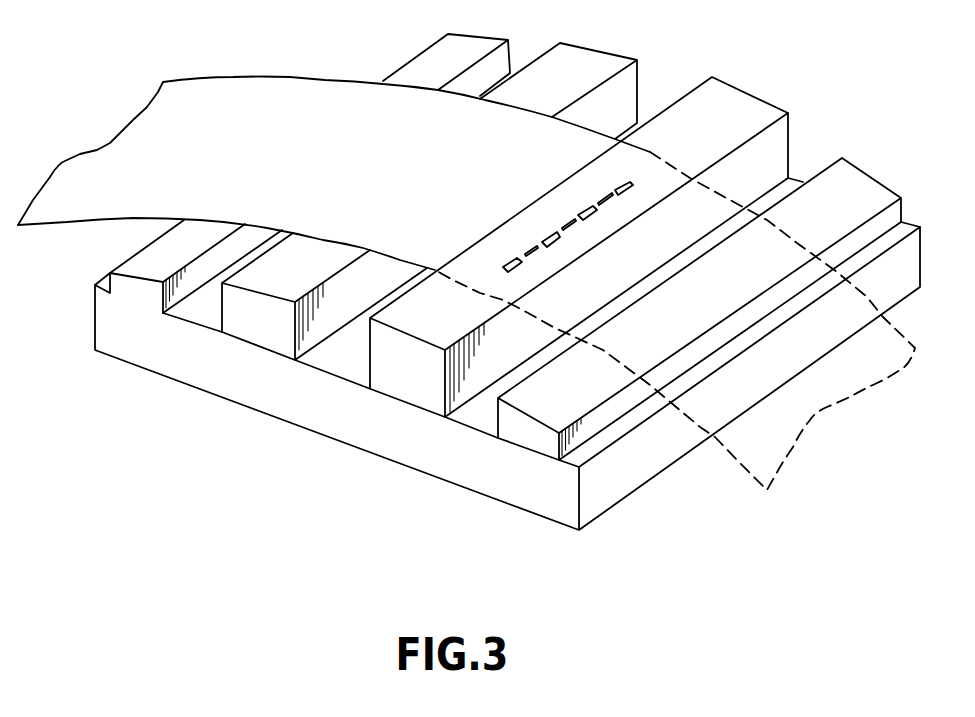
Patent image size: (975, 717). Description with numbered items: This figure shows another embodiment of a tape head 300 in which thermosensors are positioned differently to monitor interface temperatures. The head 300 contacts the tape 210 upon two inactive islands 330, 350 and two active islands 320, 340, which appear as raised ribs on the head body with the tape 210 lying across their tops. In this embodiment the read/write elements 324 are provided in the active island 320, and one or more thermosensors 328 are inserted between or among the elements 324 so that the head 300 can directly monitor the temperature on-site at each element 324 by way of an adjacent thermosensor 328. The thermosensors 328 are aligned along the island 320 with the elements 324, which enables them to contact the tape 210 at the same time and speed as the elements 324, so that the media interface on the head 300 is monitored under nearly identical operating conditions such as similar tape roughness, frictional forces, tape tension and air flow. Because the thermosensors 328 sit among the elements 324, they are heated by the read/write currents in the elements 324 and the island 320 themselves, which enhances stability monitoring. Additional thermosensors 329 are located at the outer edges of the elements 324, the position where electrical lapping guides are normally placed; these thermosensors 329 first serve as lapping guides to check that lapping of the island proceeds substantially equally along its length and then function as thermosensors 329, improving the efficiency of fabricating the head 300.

The tape 210 is at (200, 79).
The tape head 300 is at (107, 356).
The active island 320 is at (368, 363).
The read/write elements 324 is at (601, 201).
The thermosensors 328 is at (558, 241).
The thermosensors 329 is at (512, 258).
The inactive island 330 is at (497, 415).
The active island 340 is at (221, 320).
The inactive island 350 is at (125, 267).